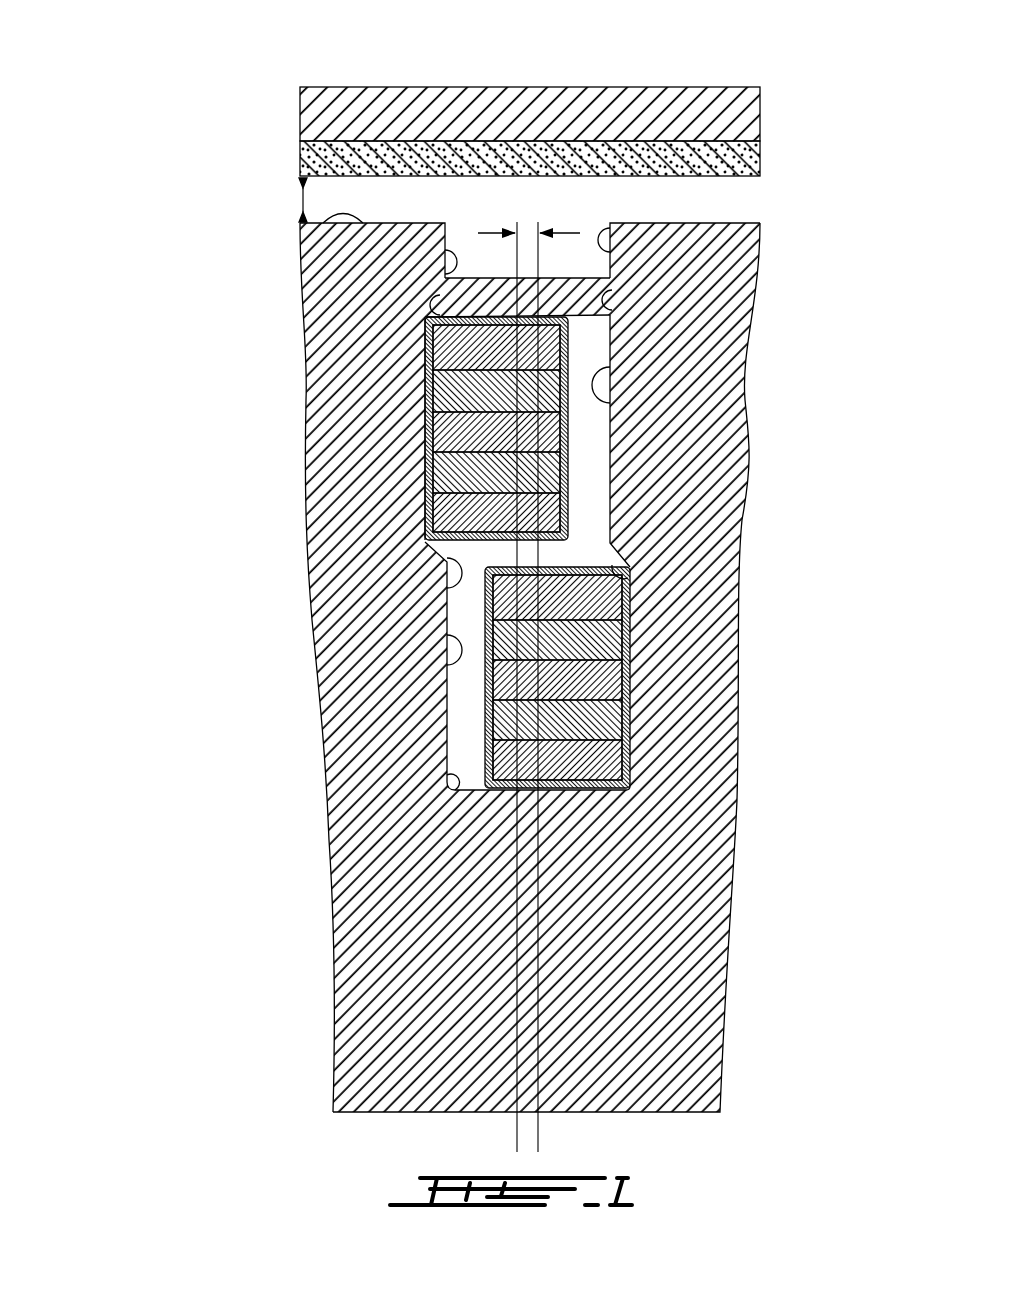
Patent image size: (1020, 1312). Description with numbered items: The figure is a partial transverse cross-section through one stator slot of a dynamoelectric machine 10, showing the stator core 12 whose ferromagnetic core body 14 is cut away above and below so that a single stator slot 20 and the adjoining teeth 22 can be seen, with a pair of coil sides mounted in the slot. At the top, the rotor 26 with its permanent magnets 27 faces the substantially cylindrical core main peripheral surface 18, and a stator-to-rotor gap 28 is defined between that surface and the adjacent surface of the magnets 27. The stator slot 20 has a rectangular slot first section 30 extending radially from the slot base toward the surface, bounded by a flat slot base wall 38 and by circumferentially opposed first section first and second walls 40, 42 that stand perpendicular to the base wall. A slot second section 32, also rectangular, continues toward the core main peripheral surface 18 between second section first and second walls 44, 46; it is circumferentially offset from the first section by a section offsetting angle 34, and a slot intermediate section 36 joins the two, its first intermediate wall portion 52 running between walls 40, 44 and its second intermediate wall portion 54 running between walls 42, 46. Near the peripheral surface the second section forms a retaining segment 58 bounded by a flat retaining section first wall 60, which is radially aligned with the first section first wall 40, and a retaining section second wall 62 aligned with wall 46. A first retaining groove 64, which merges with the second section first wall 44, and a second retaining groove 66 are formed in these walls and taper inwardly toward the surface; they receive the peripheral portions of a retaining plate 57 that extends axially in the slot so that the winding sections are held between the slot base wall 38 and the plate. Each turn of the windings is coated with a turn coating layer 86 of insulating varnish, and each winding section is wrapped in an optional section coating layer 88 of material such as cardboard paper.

The dynamoelectric machine 10 is at (168, 128).
The stator core 12 is at (318, 716).
The core body 14 is at (682, 852).
The core main peripheral surface 18 is at (300, 240).
The stator slot 20 is at (532, 258).
The tooth 22 is at (690, 336).
The rotor 26 is at (298, 100).
The permanent magnets 27 is at (300, 160).
The stator-to-rotor gap 28 is at (300, 205).
The slot first section 30 is at (460, 728).
The slot second section 32 is at (592, 488).
The section offsetting angle 34 is at (530, 225).
The slot intermediate section 36 is at (587, 549).
The slot base wall 38 is at (452, 778).
The first section first wall 40 is at (447, 668).
The first section second wall 42 is at (658, 677).
The second section first wall 44 is at (524, 428).
The second section second wall 46 is at (628, 385).
The first intermediate wall portion 52 is at (447, 596).
The second intermediate wall portion 54 is at (630, 580).
The retaining plate 57 is at (625, 280).
The retaining segment 58 is at (448, 238).
The retaining section first wall 60 is at (445, 290).
The retaining section second wall 62 is at (612, 278).
The first retaining groove 64 is at (425, 340).
The second retaining groove 66 is at (620, 283).
The turn coating layer 86 is at (565, 435).
The section coating layer 88 is at (630, 742).